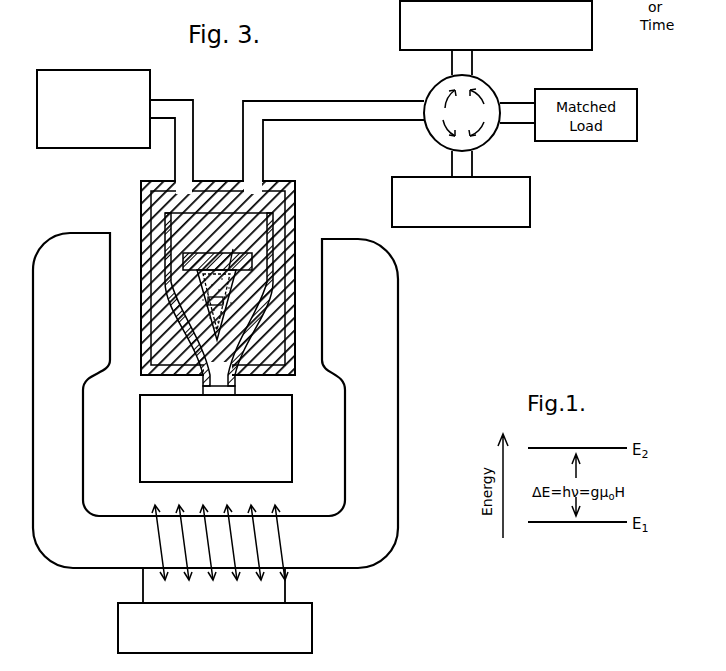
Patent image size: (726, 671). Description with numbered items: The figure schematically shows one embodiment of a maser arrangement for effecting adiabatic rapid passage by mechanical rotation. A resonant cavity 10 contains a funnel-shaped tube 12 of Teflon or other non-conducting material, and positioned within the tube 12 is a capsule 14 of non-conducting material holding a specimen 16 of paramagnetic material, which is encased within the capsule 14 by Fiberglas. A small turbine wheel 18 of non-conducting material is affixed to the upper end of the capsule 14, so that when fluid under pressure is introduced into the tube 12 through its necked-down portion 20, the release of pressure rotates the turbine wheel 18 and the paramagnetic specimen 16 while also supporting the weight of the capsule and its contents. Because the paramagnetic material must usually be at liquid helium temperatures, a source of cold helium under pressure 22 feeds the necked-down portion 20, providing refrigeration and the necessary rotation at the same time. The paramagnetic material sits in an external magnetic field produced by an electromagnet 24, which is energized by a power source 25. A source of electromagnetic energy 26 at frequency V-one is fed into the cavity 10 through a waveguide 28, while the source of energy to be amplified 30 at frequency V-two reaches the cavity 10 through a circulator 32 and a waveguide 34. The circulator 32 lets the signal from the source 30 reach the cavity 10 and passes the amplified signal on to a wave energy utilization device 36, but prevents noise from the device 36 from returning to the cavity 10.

The resonant cavity 10 is at (296, 185).
The funnel-shaped tube 12 is at (190, 349).
The capsule 14 is at (236, 300).
The specimen of paramagnetic material 16 is at (205, 298).
The turbine wheel 18 is at (241, 276).
The necked-down portion 20 is at (235, 390).
The source of cold helium under pressure 22 is at (140, 443).
The electromagnet 24 is at (388, 299).
The power source 25 is at (118, 619).
The source of electromagnetic energy 26 is at (125, 69).
The waveguide 28 is at (181, 99).
The source of energy to be amplified 30 is at (399, 30).
The circulator 32 is at (497, 96).
The waveguide 34 is at (297, 100).
The wave energy utilization device 36 is at (531, 192).